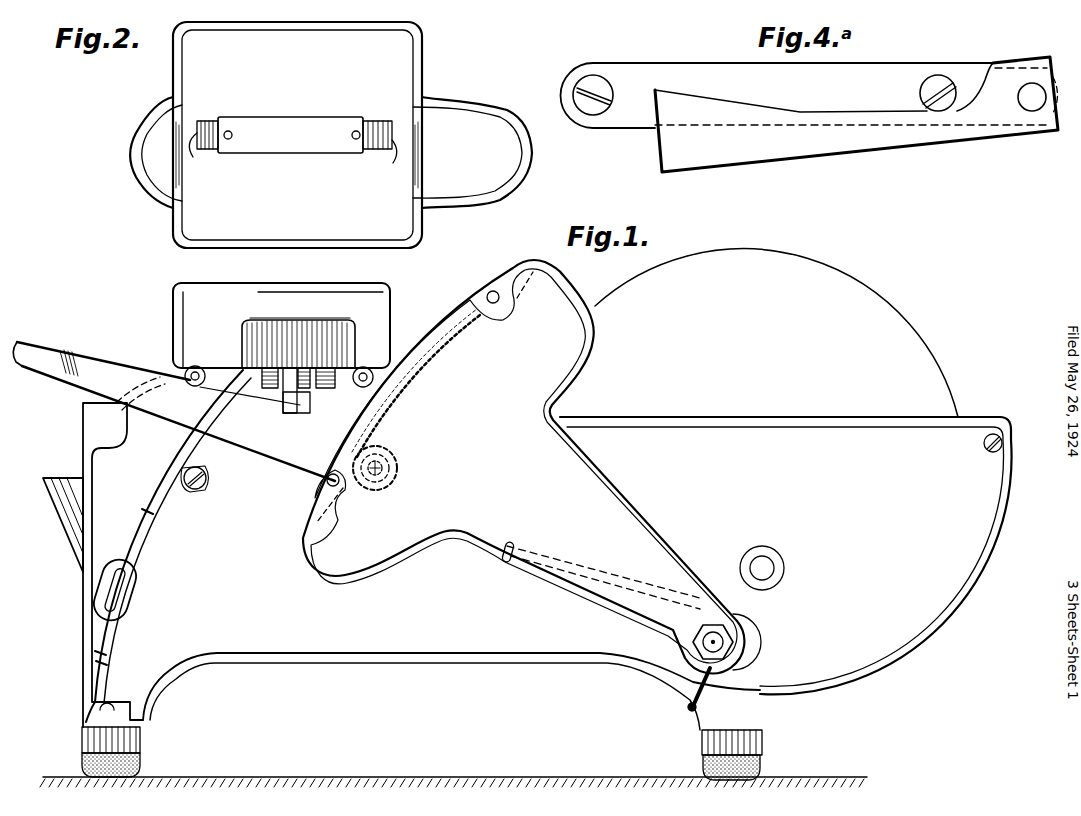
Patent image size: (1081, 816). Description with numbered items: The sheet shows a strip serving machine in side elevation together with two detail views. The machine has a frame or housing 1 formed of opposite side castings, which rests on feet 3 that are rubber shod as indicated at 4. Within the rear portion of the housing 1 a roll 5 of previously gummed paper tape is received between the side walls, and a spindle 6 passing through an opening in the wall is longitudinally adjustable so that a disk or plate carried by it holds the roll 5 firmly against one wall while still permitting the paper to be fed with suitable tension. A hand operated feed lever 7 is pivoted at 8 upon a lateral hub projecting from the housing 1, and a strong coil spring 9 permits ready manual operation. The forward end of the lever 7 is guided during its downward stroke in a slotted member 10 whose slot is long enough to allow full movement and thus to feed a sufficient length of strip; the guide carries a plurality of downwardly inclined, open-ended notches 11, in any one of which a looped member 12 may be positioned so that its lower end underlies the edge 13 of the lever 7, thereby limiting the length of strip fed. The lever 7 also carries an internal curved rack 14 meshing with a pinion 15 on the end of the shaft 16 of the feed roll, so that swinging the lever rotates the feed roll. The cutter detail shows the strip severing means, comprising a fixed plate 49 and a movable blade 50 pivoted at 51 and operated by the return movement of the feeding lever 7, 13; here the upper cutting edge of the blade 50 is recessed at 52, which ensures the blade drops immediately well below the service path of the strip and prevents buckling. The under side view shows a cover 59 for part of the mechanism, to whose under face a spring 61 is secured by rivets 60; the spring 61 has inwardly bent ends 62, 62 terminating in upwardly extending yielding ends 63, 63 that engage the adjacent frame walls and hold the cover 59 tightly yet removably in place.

In FIG. 1, the frame or housing 1 is at (947, 570).
In FIG. 1, the feet 3 is at (140, 739).
In FIG. 1, the rubber shoes 4 is at (140, 764).
In FIG. 1, the roll of gummed paper tape 5 is at (910, 344).
In FIG. 1, the spindle 6 is at (762, 567).
In FIG. 1, the hand operated feed lever 7 is at (600, 493).
In FIG. 1, the pivot 8 is at (722, 640).
In FIG. 1, the coil spring 9 is at (555, 563).
In FIG. 1, the slotted member 10 is at (155, 493).
In FIG. 1, the notches 11 is at (148, 515).
In FIG. 1, the looped member 12 is at (133, 581).
In FIG. 1, the edge of the lever 13 is at (165, 421).
In FIG. 1, the internal curved rack 14 is at (421, 370).
In FIG. 1, the pinion 15 is at (397, 462).
In FIG. 1, the shaft 16 is at (377, 488).
In FIG. 4A, the fixed plate 49 is at (640, 118).
In FIG. 4A, the movable blade 50 is at (866, 143).
In FIG. 4A, the pivot 51 is at (1021, 100).
In FIG. 4A, the recess 52 is at (828, 112).
In FIG. 2, the cover 59 is at (188, 71).
In FIG. 2, the rivets 60 is at (231, 131).
In FIG. 2, the spring 61 is at (282, 123).
In FIG. 2, the inwardly bent ends 62 is at (200, 121).
In FIG. 2, the yielding ends 63 is at (292, 156).